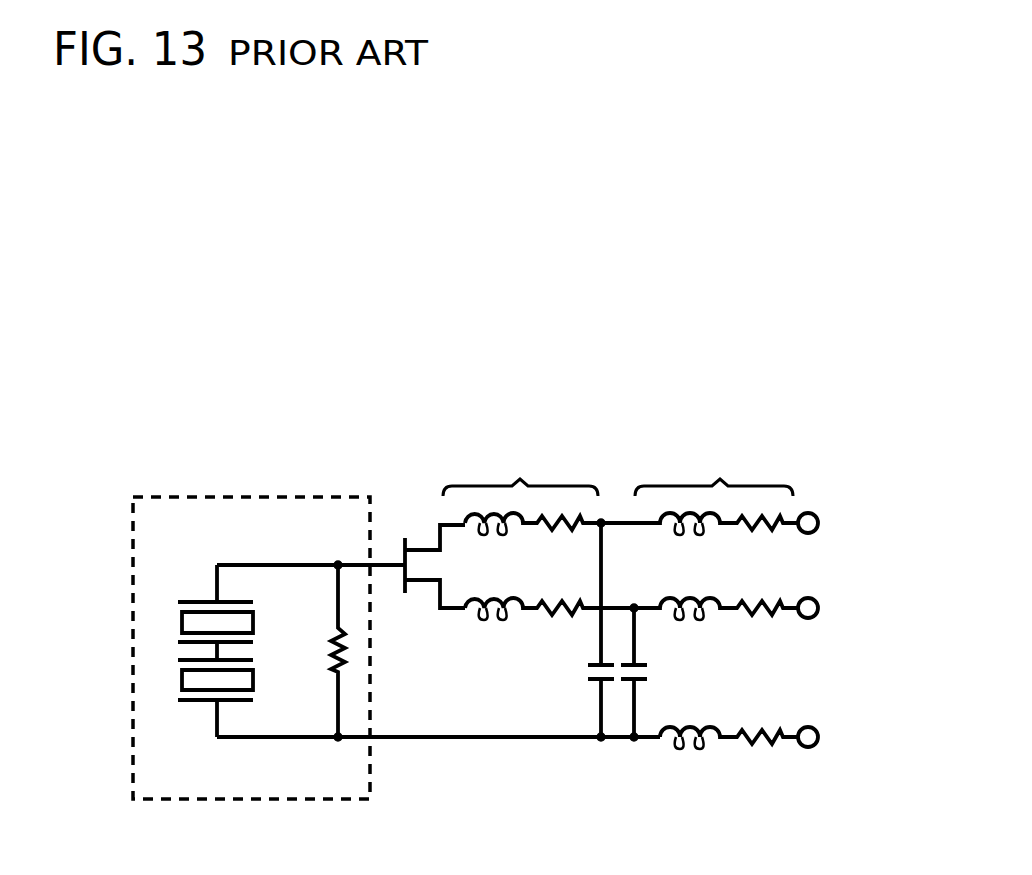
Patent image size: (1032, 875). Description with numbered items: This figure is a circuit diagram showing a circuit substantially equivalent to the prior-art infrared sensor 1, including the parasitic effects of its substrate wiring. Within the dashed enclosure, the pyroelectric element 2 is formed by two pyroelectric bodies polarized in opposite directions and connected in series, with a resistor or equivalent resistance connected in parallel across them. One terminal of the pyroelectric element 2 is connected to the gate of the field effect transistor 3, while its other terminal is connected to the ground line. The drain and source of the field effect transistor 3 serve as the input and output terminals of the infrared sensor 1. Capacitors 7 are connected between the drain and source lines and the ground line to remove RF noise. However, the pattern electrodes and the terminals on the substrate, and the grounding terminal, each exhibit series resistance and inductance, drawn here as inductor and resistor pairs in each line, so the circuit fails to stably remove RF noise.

The infrared sensor 1 is at (162, 328).
The pyroelectric element 2 is at (153, 497).
The field effect transistor 3 is at (410, 532).
The capacitors 7 is at (588, 680).